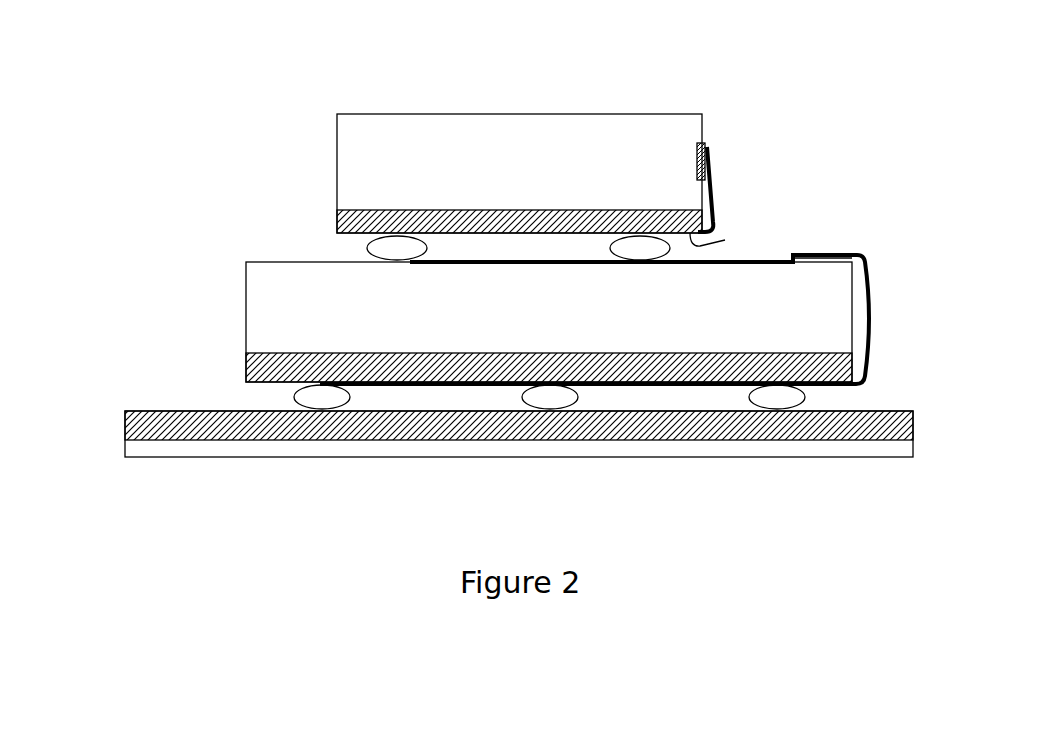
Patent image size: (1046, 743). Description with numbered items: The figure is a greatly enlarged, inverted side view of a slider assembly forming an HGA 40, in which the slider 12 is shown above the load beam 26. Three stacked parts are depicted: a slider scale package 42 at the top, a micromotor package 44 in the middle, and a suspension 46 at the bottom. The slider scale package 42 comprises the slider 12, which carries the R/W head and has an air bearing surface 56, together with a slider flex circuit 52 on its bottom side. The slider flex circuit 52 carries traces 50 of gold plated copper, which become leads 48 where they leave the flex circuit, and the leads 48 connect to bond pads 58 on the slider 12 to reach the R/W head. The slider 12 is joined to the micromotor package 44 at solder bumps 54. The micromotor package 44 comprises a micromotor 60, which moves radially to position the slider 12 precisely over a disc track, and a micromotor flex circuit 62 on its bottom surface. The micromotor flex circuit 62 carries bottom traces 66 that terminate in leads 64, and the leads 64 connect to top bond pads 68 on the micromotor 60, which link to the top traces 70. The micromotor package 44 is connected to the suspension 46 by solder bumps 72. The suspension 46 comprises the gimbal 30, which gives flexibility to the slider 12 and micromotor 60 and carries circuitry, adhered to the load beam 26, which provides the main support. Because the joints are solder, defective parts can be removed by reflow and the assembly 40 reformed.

The slider 12 is at (368, 118).
The load beam 26 is at (182, 449).
The gimbal 30 is at (161, 410).
The HGA 40 is at (222, 47).
The slider scale package 42 is at (463, 153).
The micromotor package 44 is at (528, 298).
The suspension 46 is at (469, 436).
The leads 48 is at (715, 198).
The traces 50 is at (724, 234).
The slider flex circuit 52 is at (337, 221).
The solder bumps 54 is at (425, 246).
The air bearing surface 56 is at (497, 54).
The bond pads 58 is at (705, 143).
The micromotor 60 is at (246, 290).
The micromotor flex circuit 62 is at (246, 364).
The leads 64 is at (868, 281).
The bottom traces 66 is at (832, 388).
The top bond pads 68 is at (808, 265).
The top traces 70 is at (774, 262).
The solder bumps 72 is at (350, 397).